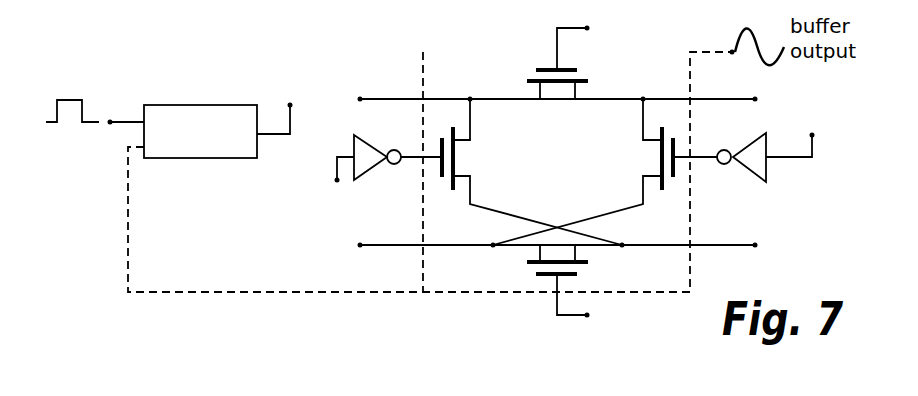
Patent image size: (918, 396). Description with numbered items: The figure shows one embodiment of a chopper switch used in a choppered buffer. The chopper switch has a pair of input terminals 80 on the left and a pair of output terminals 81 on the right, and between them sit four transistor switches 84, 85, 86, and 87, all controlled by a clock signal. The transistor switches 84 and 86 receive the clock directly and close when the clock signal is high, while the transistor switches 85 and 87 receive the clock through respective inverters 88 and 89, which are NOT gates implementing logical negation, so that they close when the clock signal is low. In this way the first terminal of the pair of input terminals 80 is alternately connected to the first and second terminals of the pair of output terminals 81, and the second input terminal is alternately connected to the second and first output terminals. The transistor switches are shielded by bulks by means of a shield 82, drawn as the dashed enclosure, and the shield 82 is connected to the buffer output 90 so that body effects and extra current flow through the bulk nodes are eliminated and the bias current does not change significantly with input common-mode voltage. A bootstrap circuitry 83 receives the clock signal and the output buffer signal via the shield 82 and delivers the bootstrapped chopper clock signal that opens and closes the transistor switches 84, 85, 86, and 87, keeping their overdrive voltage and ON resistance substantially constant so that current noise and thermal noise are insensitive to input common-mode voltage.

The pair of input terminals 80 is at (352, 105).
The pair of output terminals 81 is at (772, 104).
The shield 82 is at (512, 297).
The bootstrap circuitry 83 is at (203, 160).
The transistor switch 84 is at (563, 257).
The transistor switch 85 is at (458, 165).
The transistor switch 86 is at (550, 87).
The transistor switch 87 is at (657, 163).
The inverter 88 is at (377, 173).
The inverter 89 is at (752, 175).
The buffer output 90 is at (732, 52).